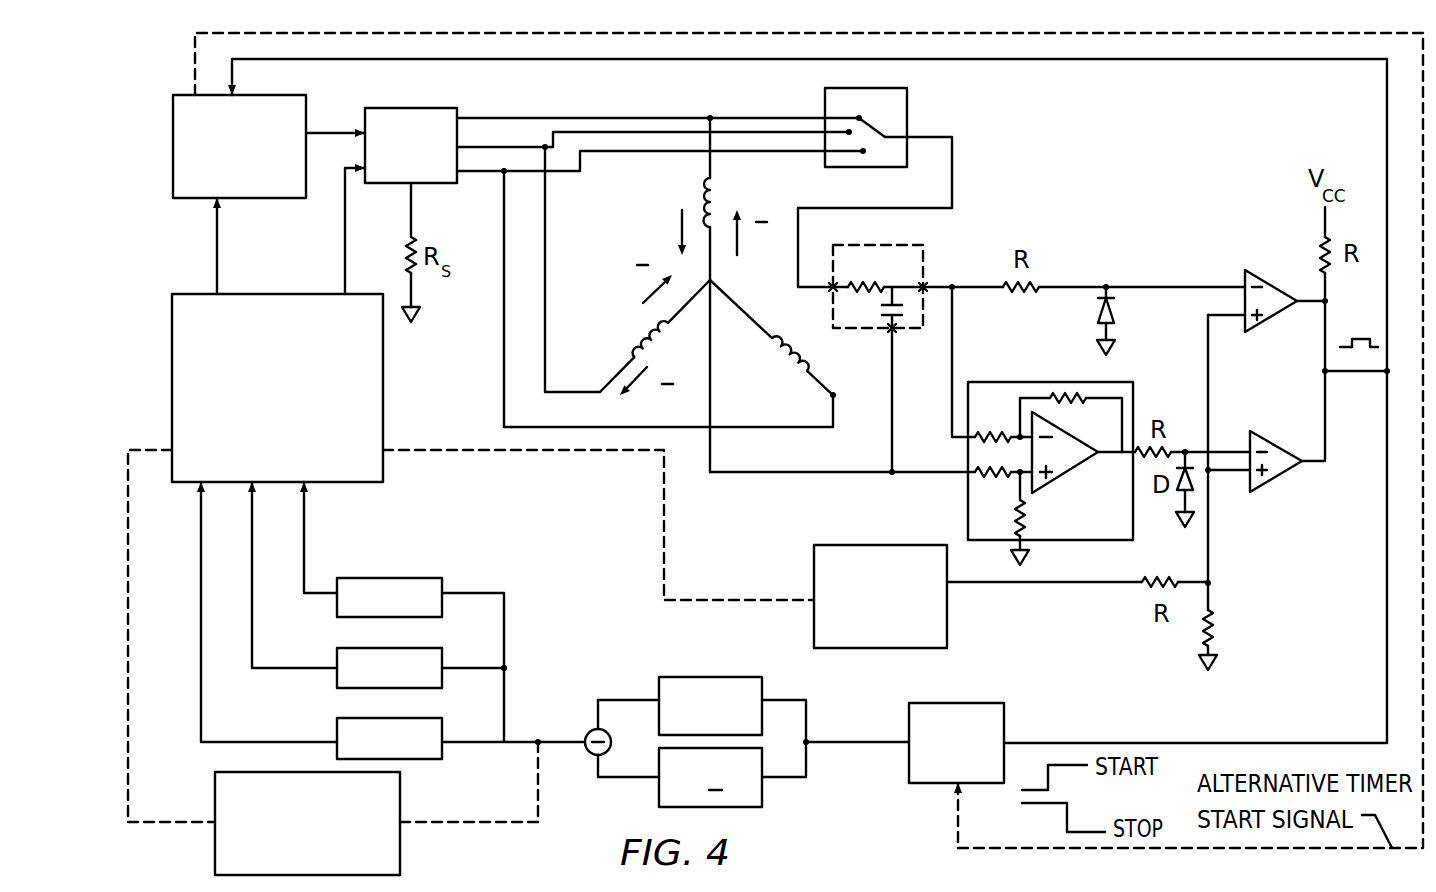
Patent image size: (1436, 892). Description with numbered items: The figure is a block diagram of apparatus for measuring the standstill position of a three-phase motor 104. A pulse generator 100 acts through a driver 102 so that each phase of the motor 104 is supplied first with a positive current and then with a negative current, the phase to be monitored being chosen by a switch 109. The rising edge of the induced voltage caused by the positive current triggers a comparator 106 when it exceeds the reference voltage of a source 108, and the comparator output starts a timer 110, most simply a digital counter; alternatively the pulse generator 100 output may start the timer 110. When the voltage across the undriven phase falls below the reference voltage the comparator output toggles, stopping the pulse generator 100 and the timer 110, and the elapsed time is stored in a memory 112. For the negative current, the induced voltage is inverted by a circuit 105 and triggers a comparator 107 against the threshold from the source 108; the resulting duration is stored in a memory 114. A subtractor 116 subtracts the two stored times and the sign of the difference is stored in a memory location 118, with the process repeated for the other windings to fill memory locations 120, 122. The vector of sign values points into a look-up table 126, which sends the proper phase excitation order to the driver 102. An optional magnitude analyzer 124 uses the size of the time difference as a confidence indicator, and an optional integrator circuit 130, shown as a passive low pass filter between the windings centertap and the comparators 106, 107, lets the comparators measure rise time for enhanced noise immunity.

The pulse generator 100 is at (245, 189).
The driver 102 is at (425, 172).
The motor 104 is at (628, 247).
The inverting circuit 105 is at (1110, 523).
The comparator 106 is at (1260, 270).
The comparator 107 is at (1268, 487).
The reference voltage source 108 is at (893, 641).
The switch 109 is at (888, 104).
The timer 110 is at (973, 768).
The memory 112 is at (716, 677).
The memory 114 is at (726, 807).
The subtractor 116 is at (592, 729).
The memory location 118 is at (422, 578).
The memory location 120 is at (425, 648).
The memory location 122 is at (425, 718).
The magnitude analyzer 124 is at (317, 868).
The look-up table 126 is at (285, 463).
The integrator circuit 130 is at (891, 276).